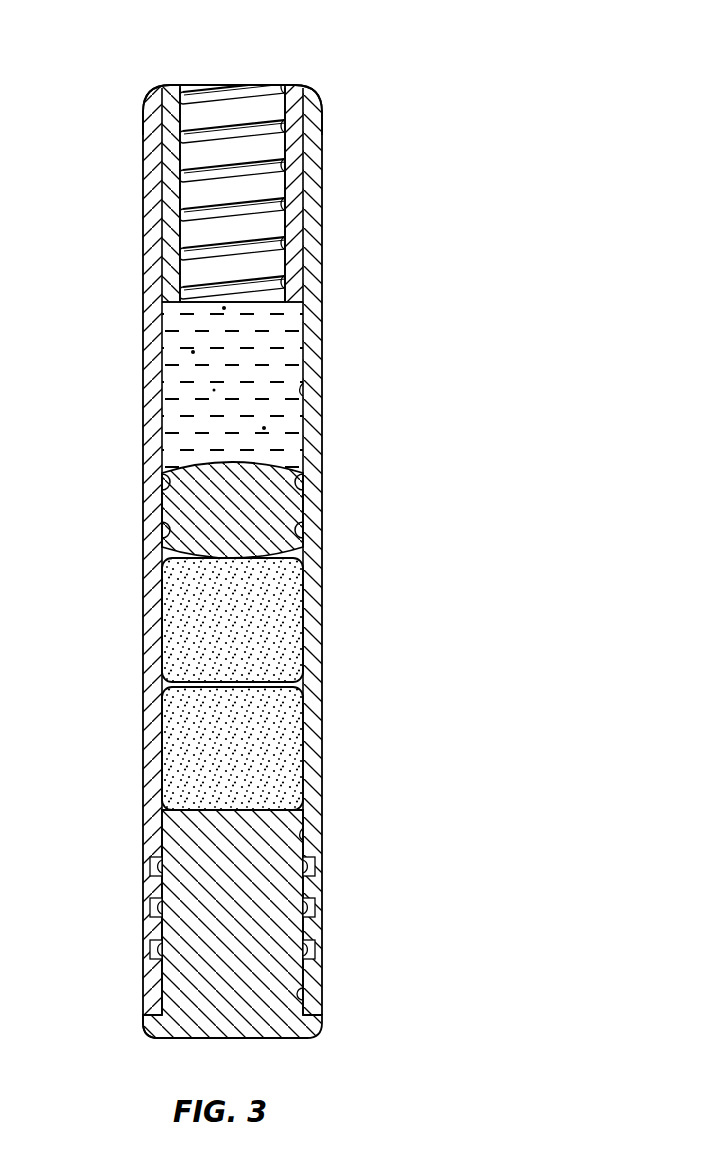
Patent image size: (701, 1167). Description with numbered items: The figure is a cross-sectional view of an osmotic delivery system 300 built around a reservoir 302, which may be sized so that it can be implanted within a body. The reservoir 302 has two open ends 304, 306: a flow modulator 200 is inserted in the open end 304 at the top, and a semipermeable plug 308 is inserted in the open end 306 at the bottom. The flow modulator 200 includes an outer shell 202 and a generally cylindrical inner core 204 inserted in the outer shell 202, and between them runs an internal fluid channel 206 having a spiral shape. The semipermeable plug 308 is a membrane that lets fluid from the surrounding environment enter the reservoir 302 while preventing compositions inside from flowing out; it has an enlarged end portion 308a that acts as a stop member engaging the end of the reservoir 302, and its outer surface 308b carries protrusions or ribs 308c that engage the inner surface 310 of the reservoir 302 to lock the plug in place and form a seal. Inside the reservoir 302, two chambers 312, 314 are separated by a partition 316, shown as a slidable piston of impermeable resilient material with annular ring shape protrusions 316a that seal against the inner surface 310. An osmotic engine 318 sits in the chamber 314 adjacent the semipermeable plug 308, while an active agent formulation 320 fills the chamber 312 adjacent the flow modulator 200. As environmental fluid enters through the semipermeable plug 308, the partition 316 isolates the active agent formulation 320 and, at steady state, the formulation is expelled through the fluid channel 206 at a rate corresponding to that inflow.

The osmotic delivery system 300 is at (138, 90).
The flow modulator 200 is at (250, 74).
The outer shell 202 is at (293, 105).
The inner core 204 is at (275, 183).
The fluid channel 206 is at (222, 128).
The reservoir 302 is at (313, 308).
The open end 304 is at (316, 114).
The open end 306 is at (317, 1017).
The semipermeable plug 308 is at (293, 1025).
The enlarged end portion 308a is at (148, 1033).
The outer surface 308b is at (307, 887).
The protrusions or ribs 308c is at (155, 910).
The inner surface 310 is at (303, 832).
The chamber 312 is at (303, 385).
The chamber 314 is at (297, 685).
The partition 316 is at (288, 510).
The annular ring shape protrusions 316a is at (163, 505).
The osmotic engine 318 is at (175, 726).
The active agent formulation 320 is at (175, 368).